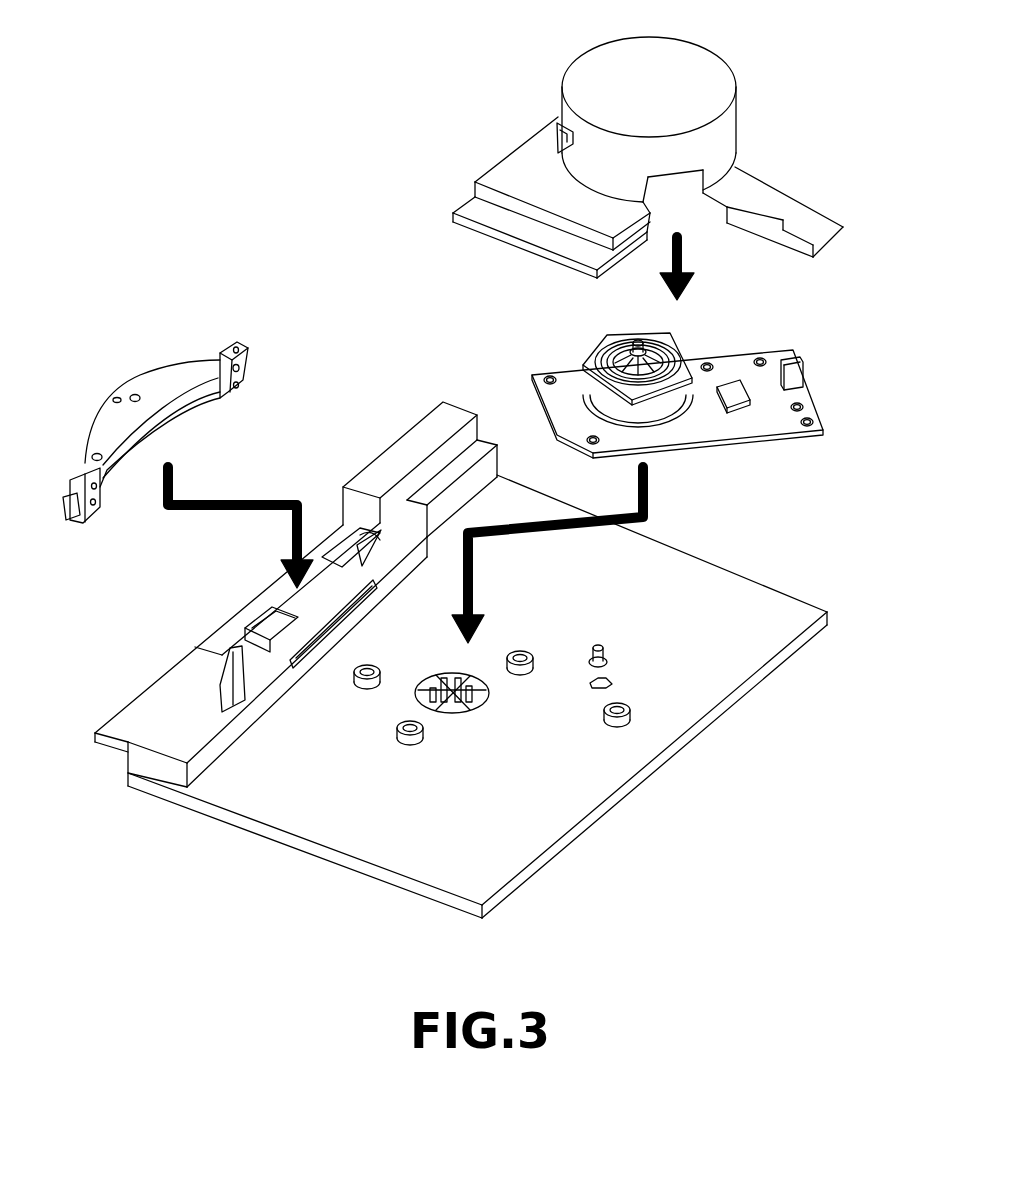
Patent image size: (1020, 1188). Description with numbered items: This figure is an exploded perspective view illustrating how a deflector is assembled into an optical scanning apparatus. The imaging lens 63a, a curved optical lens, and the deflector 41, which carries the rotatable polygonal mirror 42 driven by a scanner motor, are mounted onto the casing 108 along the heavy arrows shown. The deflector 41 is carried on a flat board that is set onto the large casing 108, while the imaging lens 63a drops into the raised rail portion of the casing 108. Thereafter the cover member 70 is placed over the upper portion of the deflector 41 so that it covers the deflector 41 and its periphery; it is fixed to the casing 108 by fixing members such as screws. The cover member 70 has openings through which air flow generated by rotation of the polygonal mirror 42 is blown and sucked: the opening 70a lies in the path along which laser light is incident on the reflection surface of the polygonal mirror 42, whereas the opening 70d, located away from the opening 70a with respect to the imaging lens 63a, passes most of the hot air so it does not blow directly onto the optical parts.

The cover member 70 is at (580, 80).
The opening 70a is at (557, 142).
The opening 70d is at (670, 196).
The rotatable polygonal mirror 42 is at (602, 332).
The deflector 41 is at (740, 425).
The imaging lens 63a is at (165, 382).
The casing 108 is at (555, 795).